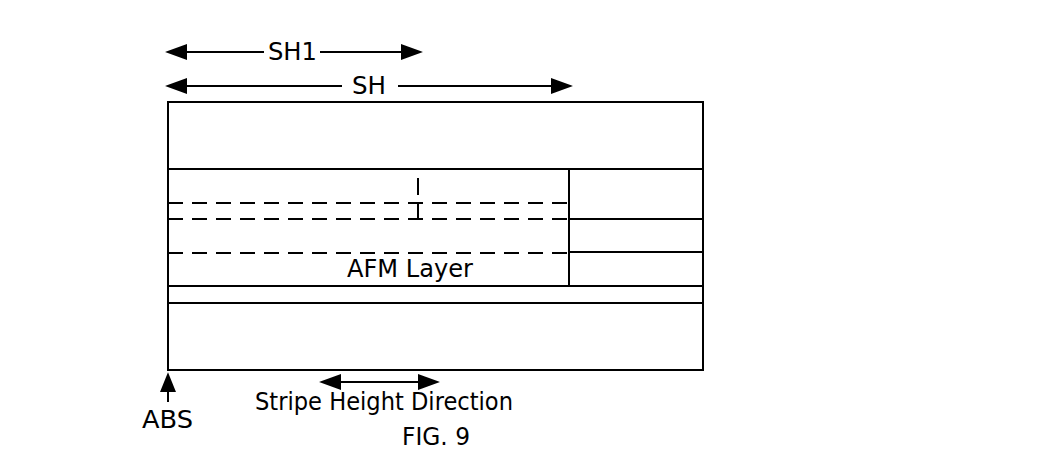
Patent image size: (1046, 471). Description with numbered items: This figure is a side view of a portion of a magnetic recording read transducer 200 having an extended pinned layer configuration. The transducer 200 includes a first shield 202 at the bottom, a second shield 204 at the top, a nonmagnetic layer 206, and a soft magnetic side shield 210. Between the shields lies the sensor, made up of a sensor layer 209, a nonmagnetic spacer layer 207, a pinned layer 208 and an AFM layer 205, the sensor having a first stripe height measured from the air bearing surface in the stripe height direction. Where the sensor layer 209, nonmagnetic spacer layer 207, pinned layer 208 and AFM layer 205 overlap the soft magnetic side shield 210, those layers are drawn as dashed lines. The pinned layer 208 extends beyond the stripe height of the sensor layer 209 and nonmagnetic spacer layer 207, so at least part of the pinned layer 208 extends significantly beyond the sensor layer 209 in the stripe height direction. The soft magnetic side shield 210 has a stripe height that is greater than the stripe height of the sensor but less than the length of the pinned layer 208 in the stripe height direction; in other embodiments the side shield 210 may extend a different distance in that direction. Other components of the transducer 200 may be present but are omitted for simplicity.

The transducer 200 is at (457, 31).
The shield 1 202 is at (703, 370).
The shield 2 204 is at (703, 152).
The AFM layer 205 is at (705, 268).
The nonmagnetic layer 206 is at (705, 293).
The nonmagnetic spacer layer 207 is at (168, 208).
The pinned layer 208 is at (705, 233).
The sensor layer 209 is at (168, 187).
The side shield 210 is at (100, 228).